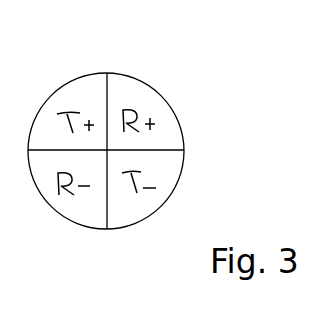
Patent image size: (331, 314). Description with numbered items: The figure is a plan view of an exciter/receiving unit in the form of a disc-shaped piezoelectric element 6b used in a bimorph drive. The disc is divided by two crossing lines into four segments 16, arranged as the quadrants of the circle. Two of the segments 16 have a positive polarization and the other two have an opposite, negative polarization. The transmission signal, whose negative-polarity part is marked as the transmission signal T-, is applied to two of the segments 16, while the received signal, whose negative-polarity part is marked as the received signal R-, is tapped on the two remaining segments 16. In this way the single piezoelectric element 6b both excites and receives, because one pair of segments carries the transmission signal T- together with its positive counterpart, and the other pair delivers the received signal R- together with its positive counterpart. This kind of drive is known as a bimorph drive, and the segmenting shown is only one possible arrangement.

The piezoelectric element 6b is at (170, 98).
The segments 16 is at (121, 92).
The received signal R- is at (74, 184).
The transmission signal T- is at (139, 182).